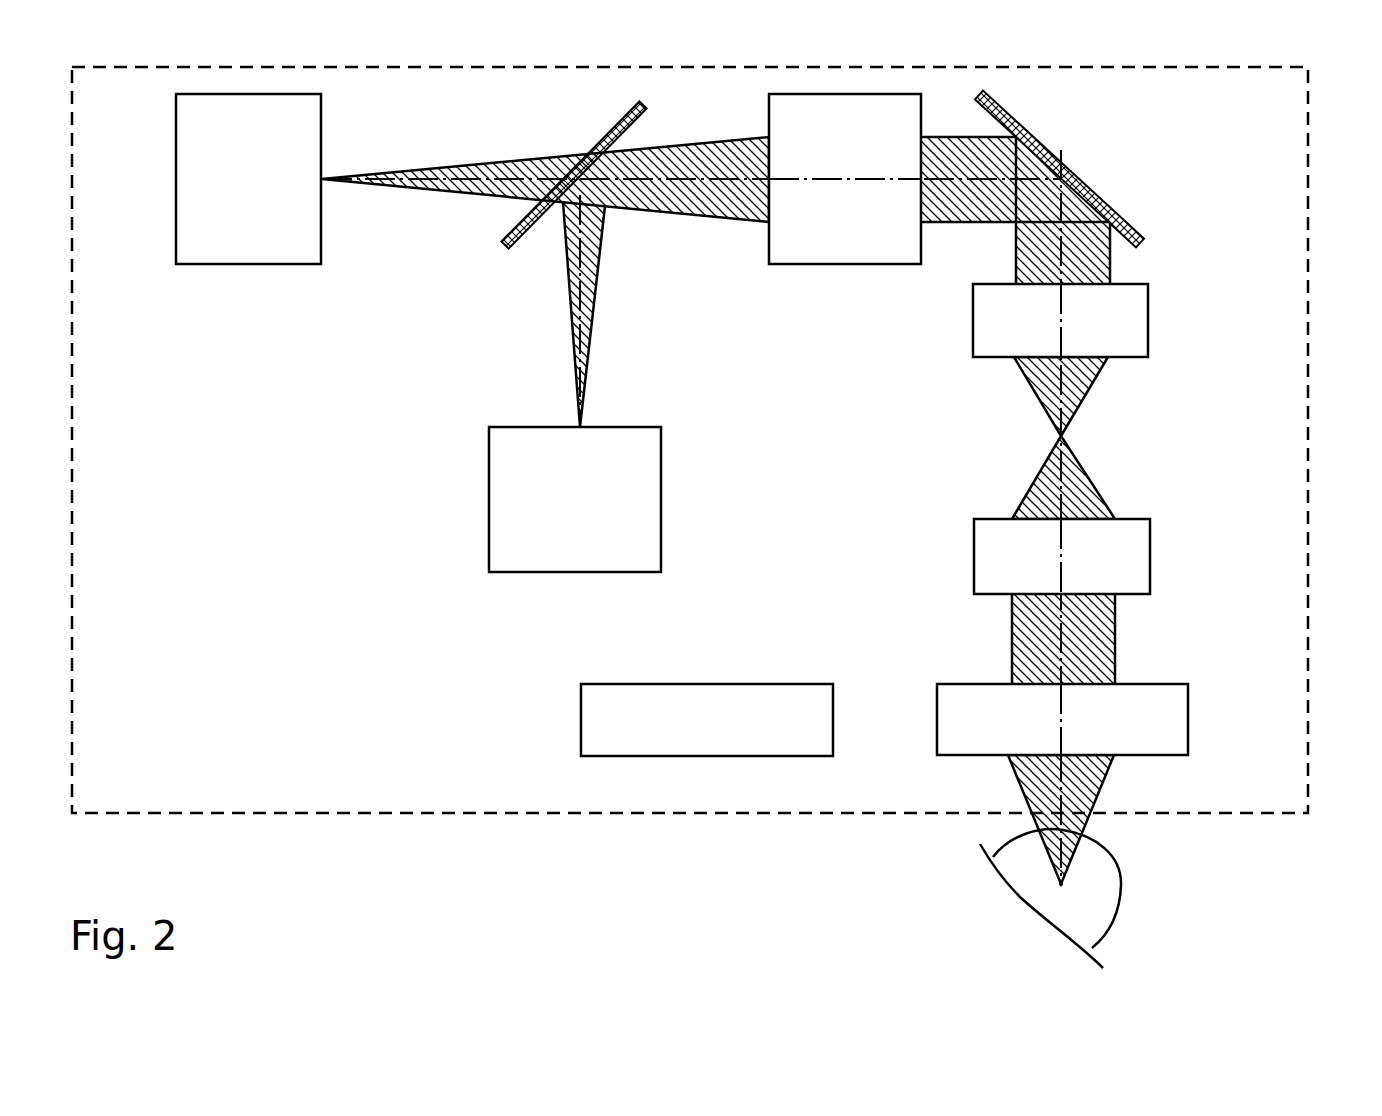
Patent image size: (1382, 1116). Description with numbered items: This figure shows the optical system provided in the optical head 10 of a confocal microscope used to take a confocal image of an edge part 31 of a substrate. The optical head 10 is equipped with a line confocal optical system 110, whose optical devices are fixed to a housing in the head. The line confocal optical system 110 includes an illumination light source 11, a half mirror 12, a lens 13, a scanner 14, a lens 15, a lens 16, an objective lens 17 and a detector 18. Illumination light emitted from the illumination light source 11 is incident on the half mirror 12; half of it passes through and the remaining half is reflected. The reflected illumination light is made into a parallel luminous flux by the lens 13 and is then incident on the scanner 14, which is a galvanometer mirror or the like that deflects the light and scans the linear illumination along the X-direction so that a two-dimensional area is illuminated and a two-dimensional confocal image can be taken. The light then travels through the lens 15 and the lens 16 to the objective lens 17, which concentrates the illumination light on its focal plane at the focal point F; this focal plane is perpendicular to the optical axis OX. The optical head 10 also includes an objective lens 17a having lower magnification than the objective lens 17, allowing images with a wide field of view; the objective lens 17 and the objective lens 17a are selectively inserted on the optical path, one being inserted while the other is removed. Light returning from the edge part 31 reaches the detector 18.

The optical head 10 is at (1310, 83).
The line confocal optical system 110 is at (374, 651).
The illumination light source 11 is at (635, 425).
The half mirror 12 is at (506, 250).
The lens 13 is at (865, 265).
The scanner 14 is at (1010, 116).
The lens 15 is at (1150, 320).
The lens 16 is at (1152, 556).
The objective lens 17 is at (1190, 720).
The objective lens 17a is at (835, 718).
The detector 18 is at (277, 265).
The optical axis OX is at (1040, 397).
The focal point F is at (1060, 885).
The edge part 31 is at (1118, 892).